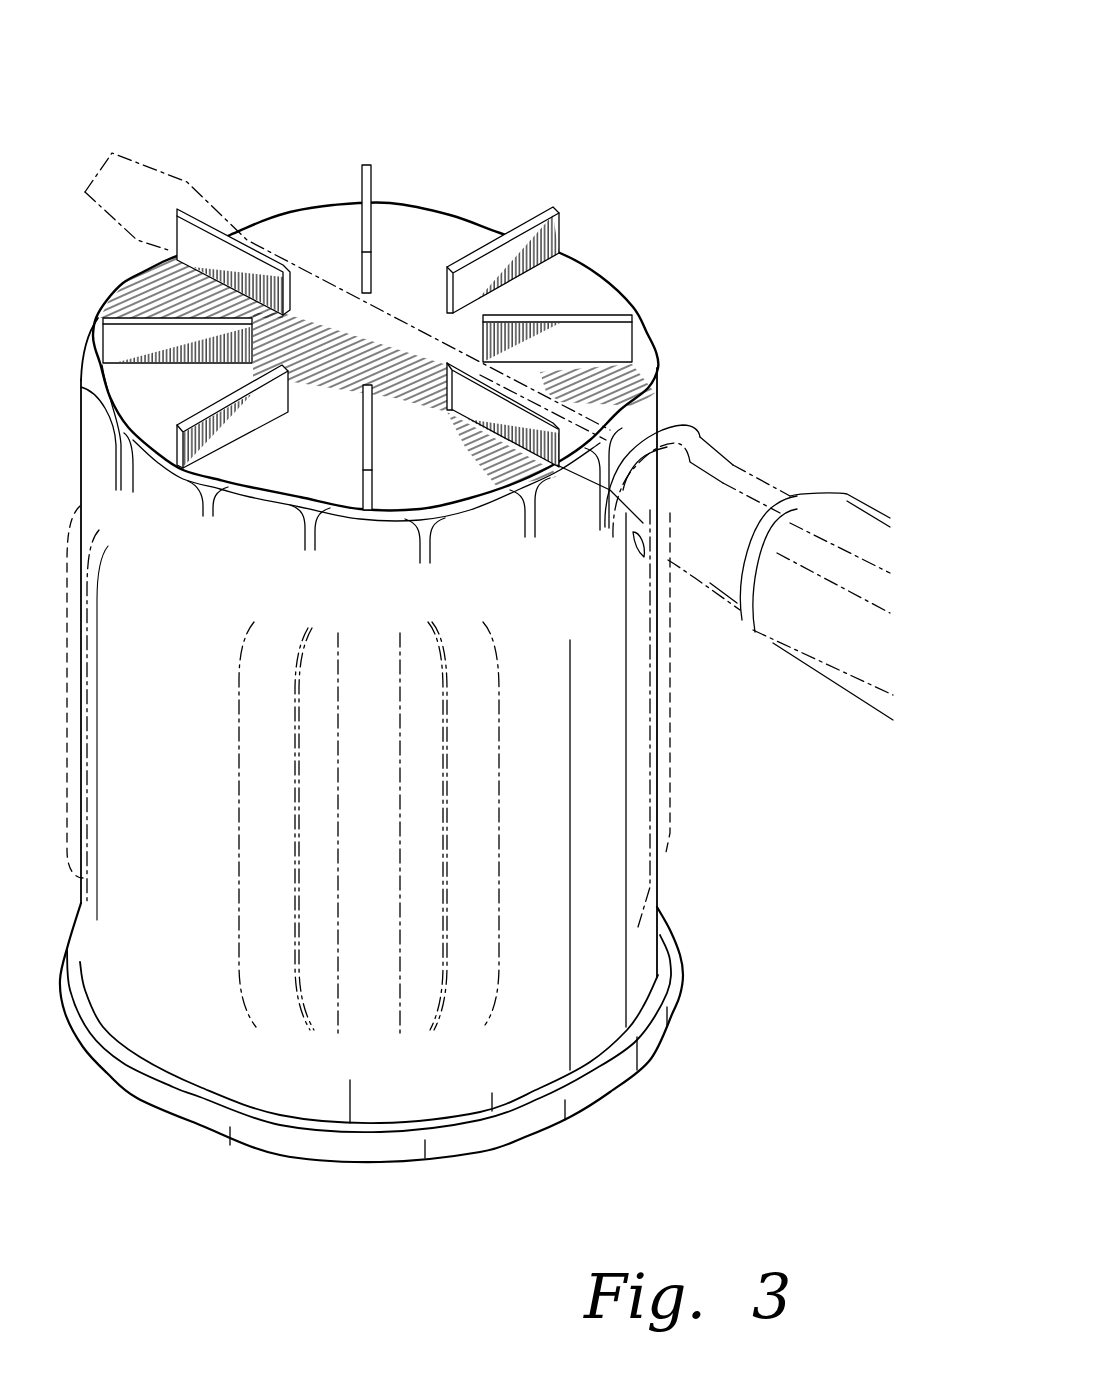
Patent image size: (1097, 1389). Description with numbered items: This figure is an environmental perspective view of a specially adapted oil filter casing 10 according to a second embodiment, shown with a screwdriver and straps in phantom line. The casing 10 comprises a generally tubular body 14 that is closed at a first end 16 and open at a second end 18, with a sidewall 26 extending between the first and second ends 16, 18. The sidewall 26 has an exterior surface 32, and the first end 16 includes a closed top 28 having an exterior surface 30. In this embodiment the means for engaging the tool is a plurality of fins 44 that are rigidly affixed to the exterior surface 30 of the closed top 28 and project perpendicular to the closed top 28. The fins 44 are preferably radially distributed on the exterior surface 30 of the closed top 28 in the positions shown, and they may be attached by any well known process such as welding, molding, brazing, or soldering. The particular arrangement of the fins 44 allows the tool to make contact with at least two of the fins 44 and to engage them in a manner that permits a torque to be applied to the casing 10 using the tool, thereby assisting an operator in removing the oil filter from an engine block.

The oil filter casing 10 is at (498, 88).
The tubular body 14 is at (700, 802).
The first end 16 is at (646, 296).
The second end 18 is at (703, 958).
The sidewall 26 is at (178, 748).
The closed top 28 is at (328, 472).
The exterior surface 30 is at (295, 227).
The exterior surface 32 is at (610, 724).
The fins 44 is at (556, 222).